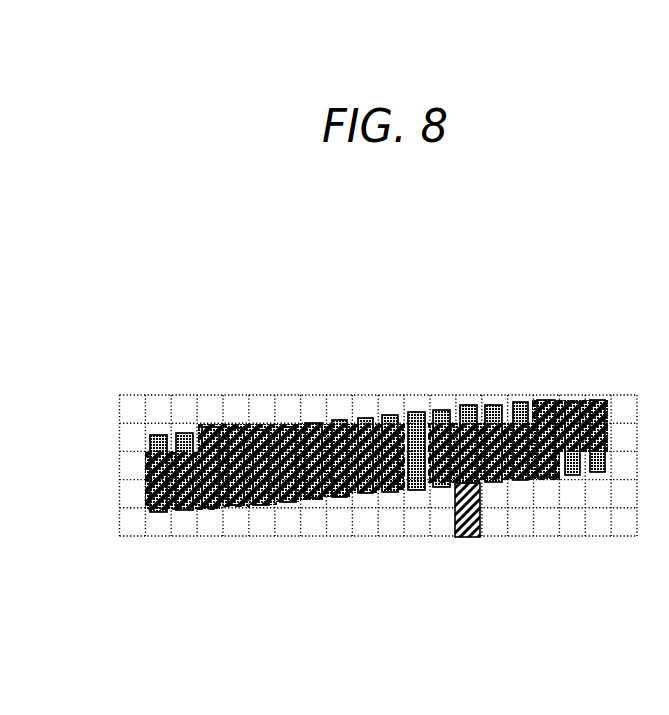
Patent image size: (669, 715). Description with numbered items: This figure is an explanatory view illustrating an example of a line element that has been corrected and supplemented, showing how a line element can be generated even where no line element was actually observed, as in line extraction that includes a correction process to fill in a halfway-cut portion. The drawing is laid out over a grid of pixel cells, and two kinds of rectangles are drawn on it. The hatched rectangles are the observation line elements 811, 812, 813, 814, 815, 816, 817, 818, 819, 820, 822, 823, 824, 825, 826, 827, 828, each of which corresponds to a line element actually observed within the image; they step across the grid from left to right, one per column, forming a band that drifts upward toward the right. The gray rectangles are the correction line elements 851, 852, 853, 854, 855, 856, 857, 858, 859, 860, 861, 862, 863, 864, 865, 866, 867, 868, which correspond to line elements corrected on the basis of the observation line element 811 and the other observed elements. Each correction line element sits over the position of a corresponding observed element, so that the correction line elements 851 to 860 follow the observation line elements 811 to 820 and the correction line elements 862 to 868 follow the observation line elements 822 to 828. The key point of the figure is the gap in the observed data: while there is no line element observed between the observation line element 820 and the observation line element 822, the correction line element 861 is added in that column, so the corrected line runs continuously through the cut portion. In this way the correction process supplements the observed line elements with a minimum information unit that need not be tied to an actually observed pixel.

The observation line element 811 is at (158, 435).
The observation line element 812 is at (183, 433).
The observation line element 813 is at (207, 427).
The observation line element 814 is at (231, 428).
The observation line element 815 is at (262, 430).
The observation line element 816 is at (283, 427).
The observation line element 817 is at (312, 423).
The observation line element 818 is at (337, 420).
The observation line element 819 is at (364, 418).
The observation line element 820 is at (390, 415).
The observation line element 822 is at (437, 410).
The observation line element 823 is at (462, 405).
The observation line element 824 is at (487, 405).
The observation line element 825 is at (512, 402).
The observation line element 826 is at (545, 400).
The observation line element 827 is at (571, 402).
The observation line element 828 is at (597, 400).
The correction line element 851 is at (158, 512).
The correction line element 852 is at (184, 510).
The correction line element 853 is at (210, 507).
The correction line element 854 is at (236, 505).
The correction line element 855 is at (261, 505).
The correction line element 856 is at (288, 502).
The correction line element 857 is at (313, 498).
The correction line element 858 is at (339, 497).
The correction line element 859 is at (365, 493).
The correction line element 860 is at (390, 492).
The correction line element 861 is at (416, 490).
The correction line element 862 is at (441, 487).
The correction line element 863 is at (467, 537).
The correction line element 864 is at (493, 482).
The correction line element 865 is at (520, 480).
The correction line element 866 is at (546, 477).
The correction line element 867 is at (572, 475).
The correction line element 868 is at (597, 472).